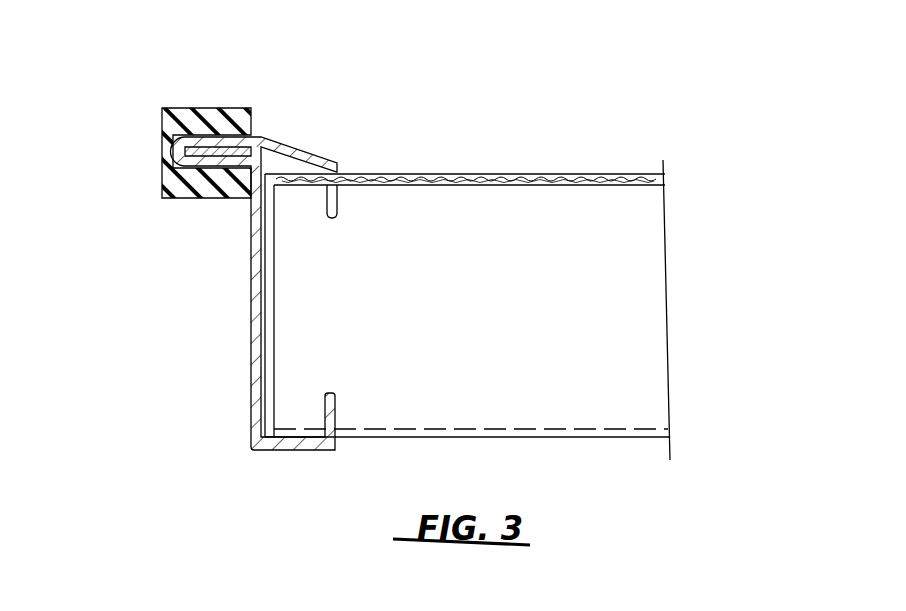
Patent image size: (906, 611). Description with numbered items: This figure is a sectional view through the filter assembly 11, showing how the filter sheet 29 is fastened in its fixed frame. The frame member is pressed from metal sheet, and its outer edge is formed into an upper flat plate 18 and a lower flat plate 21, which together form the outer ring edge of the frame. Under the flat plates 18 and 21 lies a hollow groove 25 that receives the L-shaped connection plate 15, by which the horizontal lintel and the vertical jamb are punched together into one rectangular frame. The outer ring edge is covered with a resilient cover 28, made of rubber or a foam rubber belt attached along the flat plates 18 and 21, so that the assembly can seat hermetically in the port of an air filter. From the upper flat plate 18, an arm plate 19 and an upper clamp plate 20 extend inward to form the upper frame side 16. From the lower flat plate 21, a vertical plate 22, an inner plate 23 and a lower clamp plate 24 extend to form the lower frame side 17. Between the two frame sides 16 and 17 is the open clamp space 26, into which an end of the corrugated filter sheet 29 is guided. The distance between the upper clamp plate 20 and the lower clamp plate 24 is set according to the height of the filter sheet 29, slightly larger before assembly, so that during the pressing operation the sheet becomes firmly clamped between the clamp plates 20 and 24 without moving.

The filter assembly 11 is at (470, 62).
The L-shaped connection plate 15 is at (182, 157).
The upper frame side 16 is at (261, 287).
The lower frame side 17 is at (225, 242).
The upper flat plate 18 is at (164, 145).
The arm plate 19 is at (303, 150).
The upper clamp plate 20 is at (337, 197).
The lower flat plate 21 is at (192, 197).
The vertical plate 22 is at (247, 310).
The inner plate 23 is at (293, 450).
The lower clamp plate 24 is at (337, 413).
The hollow groove 25 is at (241, 138).
The open clamp space 26 is at (308, 310).
The resilient cover 28 is at (172, 112).
The filter sheet 29 is at (465, 175).